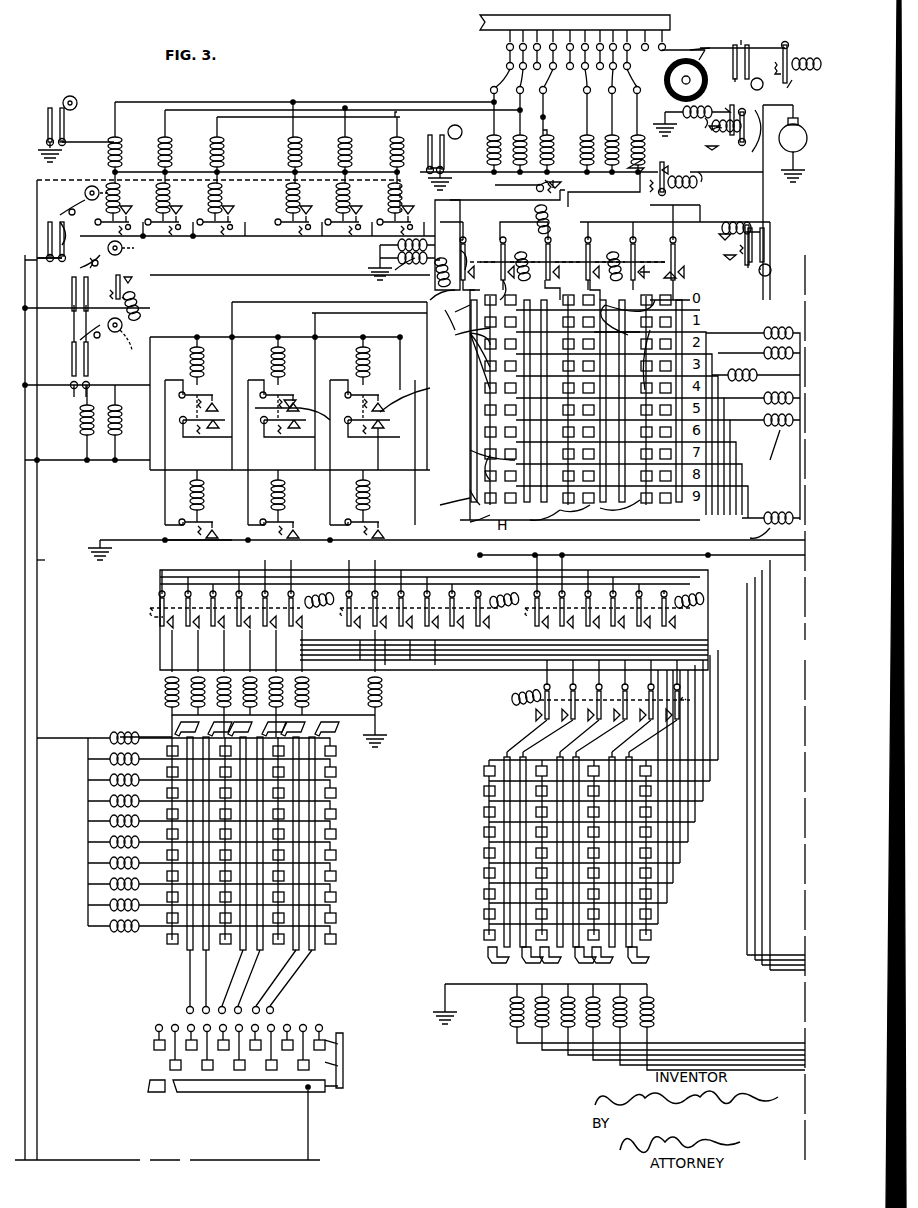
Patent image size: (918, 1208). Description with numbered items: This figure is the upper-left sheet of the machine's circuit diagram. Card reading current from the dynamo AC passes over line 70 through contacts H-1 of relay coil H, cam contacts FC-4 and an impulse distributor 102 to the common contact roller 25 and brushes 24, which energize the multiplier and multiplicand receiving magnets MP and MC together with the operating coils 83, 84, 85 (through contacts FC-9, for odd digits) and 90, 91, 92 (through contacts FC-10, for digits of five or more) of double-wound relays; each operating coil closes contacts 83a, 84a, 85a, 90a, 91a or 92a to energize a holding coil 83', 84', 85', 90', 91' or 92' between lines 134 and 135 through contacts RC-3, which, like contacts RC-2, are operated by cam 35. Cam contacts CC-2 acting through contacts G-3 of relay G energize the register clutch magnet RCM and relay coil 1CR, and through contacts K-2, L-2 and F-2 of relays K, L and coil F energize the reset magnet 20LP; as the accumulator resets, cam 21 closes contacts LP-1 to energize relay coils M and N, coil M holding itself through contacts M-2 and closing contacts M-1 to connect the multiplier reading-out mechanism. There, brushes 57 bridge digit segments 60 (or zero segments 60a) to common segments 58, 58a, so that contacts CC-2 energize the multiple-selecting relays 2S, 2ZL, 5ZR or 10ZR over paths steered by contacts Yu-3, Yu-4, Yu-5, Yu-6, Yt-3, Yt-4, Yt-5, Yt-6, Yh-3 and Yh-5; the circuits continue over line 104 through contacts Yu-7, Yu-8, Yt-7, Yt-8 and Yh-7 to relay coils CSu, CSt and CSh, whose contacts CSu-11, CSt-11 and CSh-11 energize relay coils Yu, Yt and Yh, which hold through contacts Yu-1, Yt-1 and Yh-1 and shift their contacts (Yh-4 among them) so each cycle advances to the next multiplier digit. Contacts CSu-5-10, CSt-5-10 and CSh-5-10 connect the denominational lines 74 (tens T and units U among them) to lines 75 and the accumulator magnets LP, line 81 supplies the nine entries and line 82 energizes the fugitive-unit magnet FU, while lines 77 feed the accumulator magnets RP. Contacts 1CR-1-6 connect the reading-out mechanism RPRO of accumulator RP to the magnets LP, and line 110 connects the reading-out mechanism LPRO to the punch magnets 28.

The contact roller 25 is at (480, 22).
The brushes 24 is at (540, 44).
The impulse distributor 102 is at (690, 55).
The cam contacts FC-4 is at (742, 45).
The relay coil H is at (808, 32).
The contacts H-1 is at (780, 72).
The line 70 is at (785, 198).
The dynamo AC is at (788, 143).
The reset clutch magnet 20LP is at (693, 111).
The contacts L-2 is at (709, 120).
The relay coil F is at (733, 134).
The contacts F-2 is at (744, 141).
The relay L is at (712, 158).
The contacts K-2 is at (639, 178).
The relay K is at (682, 179).
The multiplicand receiving magnets MC is at (553, 130).
The multiplier receiving magnets MP is at (628, 135).
The relay G is at (518, 186).
The contacts G-3 is at (564, 207).
The relay coil M is at (145, 272).
The contacts M-1 is at (722, 225).
The contacts M-2 is at (138, 264).
The cam contacts CC-2 is at (765, 263).
The cam contacts FC-10 is at (55, 95).
The cam contacts FC-9 is at (435, 128).
The relay operating coil 92 is at (128, 123).
The relay operating coil 91 is at (178, 123).
The relay operating coil 90 is at (229, 123).
The relay operating coil 85 is at (305, 123).
The relay operating coil 84 is at (354, 123).
The relay operating coil 83 is at (397, 123).
The holding coil 92' is at (127, 182).
The holding coil 91' is at (177, 182).
The holding coil 90' is at (233, 182).
The holding coil 85' is at (306, 182).
The holding coil 84' is at (356, 182).
The holding coil 83' is at (406, 191).
The contacts 92a is at (123, 213).
The contacts 91a is at (174, 213).
The contacts 90a is at (231, 212).
The contacts 85a is at (303, 213).
The contacts 84a is at (354, 213).
The contacts 83a is at (410, 222).
The cam 35 is at (75, 183).
The contacts RC-3 is at (61, 229).
The contacts RC-2 is at (69, 283).
The register clutch magnet RCM is at (380, 245).
The relay coil 1CR is at (436, 482).
The relay coil Yh is at (190, 340).
The relay coil Yt is at (272, 340).
The relay coil Yu is at (358, 340).
The contacts Yh-3 is at (476, 220).
The contacts Yt-5 is at (552, 240).
The contacts Yt-4 is at (584, 240).
The contacts Yu-5 is at (668, 240).
The contacts Yu-4 is at (660, 265).
The contacts Yu-3 is at (680, 275).
The contacts Yt-6 is at (523, 261).
The contacts Yt-3 is at (563, 290).
The contacts Yu-6 is at (608, 290).
The contacts Yh-5 is at (426, 293).
The contacts Yh-4 is at (418, 320).
The zero segments 60a is at (549, 311).
The segments 60 is at (537, 434).
The brushes 57 is at (548, 390).
The common segments 58 is at (582, 412).
The common segment 58a is at (480, 515).
The tens denomination T is at (578, 525).
The units denomination U is at (659, 525).
The relay coil 2S is at (740, 370).
The relay coil 2ZL is at (759, 364).
The relay coil 5ZR is at (765, 444).
The relay coil 10ZR is at (770, 505).
The line 104 is at (750, 533).
The line 81 is at (668, 560).
The line 82 is at (712, 620).
The lines 75 is at (505, 660).
The contacts Yh-1 is at (202, 389).
The contacts Yt-1 is at (300, 380).
The contacts Yu-1 is at (380, 385).
The contacts Yu-8 is at (420, 395).
The contacts Yh-7 is at (205, 430).
The contacts Yt-7 is at (285, 430).
The contacts Yt-8 is at (309, 429).
The contacts Yu-7 is at (395, 440).
The contacts LP-1 is at (70, 343).
The cam 21 is at (113, 341).
The relay coil N is at (122, 418).
The relay coil CSh is at (190, 492).
The relay coil CSt is at (272, 492).
The relay coil CSu is at (356, 492).
The contacts CSh-11 is at (225, 530).
The contacts CSt-11 is at (305, 530).
The contacts CSu-11 is at (390, 530).
The line 134 is at (28, 526).
The line 135 is at (28, 586).
The contacts CSh-5-10 is at (170, 630).
The contacts CSt-5-10 is at (355, 632).
The contacts CSu-5-10 is at (610, 632).
The accumulator magnets LP is at (165, 700).
The magnet FU is at (383, 694).
The contacts 1CR-1-6 is at (670, 722).
The punch magnets 28 is at (100, 845).
The reading-out mechanism LPRO is at (235, 864).
The line 110 is at (308, 1122).
The reading-out mechanism RPRO is at (594, 806).
The lines 74 is at (752, 770).
The accumulator magnets RP is at (655, 1010).
The lines 77 is at (737, 1058).